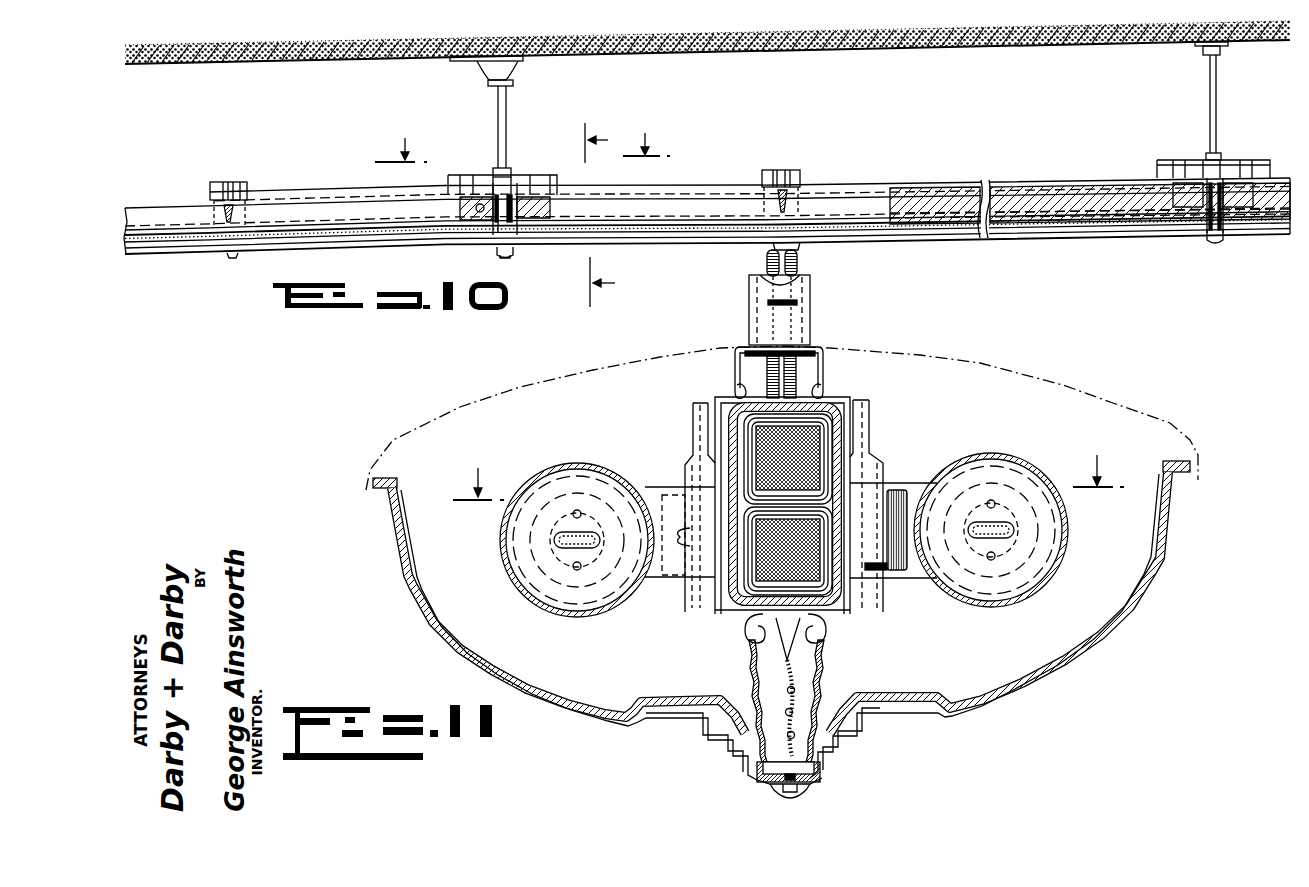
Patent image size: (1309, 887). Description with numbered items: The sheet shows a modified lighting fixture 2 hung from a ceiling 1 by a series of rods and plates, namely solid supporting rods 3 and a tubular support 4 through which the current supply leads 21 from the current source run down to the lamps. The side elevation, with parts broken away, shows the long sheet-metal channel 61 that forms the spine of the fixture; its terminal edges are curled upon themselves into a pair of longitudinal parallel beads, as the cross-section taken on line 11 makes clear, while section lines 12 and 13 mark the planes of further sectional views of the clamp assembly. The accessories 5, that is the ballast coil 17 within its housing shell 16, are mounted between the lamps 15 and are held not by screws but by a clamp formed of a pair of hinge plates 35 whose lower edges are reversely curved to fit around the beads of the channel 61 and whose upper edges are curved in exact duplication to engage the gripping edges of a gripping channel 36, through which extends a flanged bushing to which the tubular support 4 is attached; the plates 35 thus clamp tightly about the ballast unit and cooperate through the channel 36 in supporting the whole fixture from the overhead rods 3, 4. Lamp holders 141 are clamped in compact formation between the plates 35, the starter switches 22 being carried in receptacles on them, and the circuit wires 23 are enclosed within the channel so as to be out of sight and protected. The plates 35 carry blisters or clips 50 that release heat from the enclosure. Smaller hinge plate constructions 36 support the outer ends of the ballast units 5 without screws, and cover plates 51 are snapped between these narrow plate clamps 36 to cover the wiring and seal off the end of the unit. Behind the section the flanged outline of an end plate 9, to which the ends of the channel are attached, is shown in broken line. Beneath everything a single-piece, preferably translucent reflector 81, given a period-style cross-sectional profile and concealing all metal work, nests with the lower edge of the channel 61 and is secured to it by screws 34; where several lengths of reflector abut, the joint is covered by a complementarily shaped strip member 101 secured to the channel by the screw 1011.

In FIG. 10, the ceiling 1 is at (828, 49).
In FIG. 10, the fixture 2 is at (1090, 222).
In FIG. 10, the supporting rods 3 is at (1209, 93).
In FIG. 10, the tubular support 4 is at (507, 108).
In FIG. 11, the tubular support 4 is at (753, 286).
In FIG. 10, the ballast coil unit 5 is at (338, 191).
In FIG. 10, the channel 61 is at (877, 237).
In FIG. 11, the channel 61 is at (820, 660).
In FIG. 10, the reflector 81 is at (150, 257).
In FIG. 11, the reflector 81 is at (643, 693).
In FIG. 11, the end plate 9 is at (1125, 405).
In FIG. 10, the section line 11 is at (614, 215).
In FIG. 10, the section line 12 is at (522, 136).
In FIG. 11, the section line 13 is at (788, 466).
In FIG. 10, the lamp holders 141 is at (498, 217).
In FIG. 11, the lamp holders 141 is at (647, 587).
In FIG. 10, the lamps 15 is at (303, 197).
In FIG. 11, the lamps 15 is at (540, 603).
In FIG. 11, the housing shell 16 is at (835, 397).
In FIG. 11, the ballast coil 17 is at (817, 438).
In FIG. 11, the current supply leads 21 is at (769, 272).
In FIG. 10, the starter switches 22 is at (477, 217).
In FIG. 11, the starter switches 22 is at (893, 493).
In FIG. 11, the circuit wires 23 is at (800, 712).
In FIG. 10, the screws 34 is at (232, 257).
In FIG. 11, the screws 34 is at (820, 790).
In FIG. 10, the hinge plates 35 is at (539, 178).
In FIG. 11, the hinge plates 35 is at (730, 618).
In FIG. 10, the gripping channel 36 is at (233, 182).
In FIG. 11, the gripping channel 36 is at (823, 357).
In FIG. 10, the clips 50 is at (226, 182).
In FIG. 11, the clips 50 is at (693, 413).
In FIG. 10, the cover plates 51 is at (210, 192).
In FIG. 10, the strip member 101 is at (515, 253).
In FIG. 11, the strip member 101 is at (613, 723).
In FIG. 10, the screw 1011 is at (510, 253).
In FIG. 11, the screw 1011 is at (777, 790).